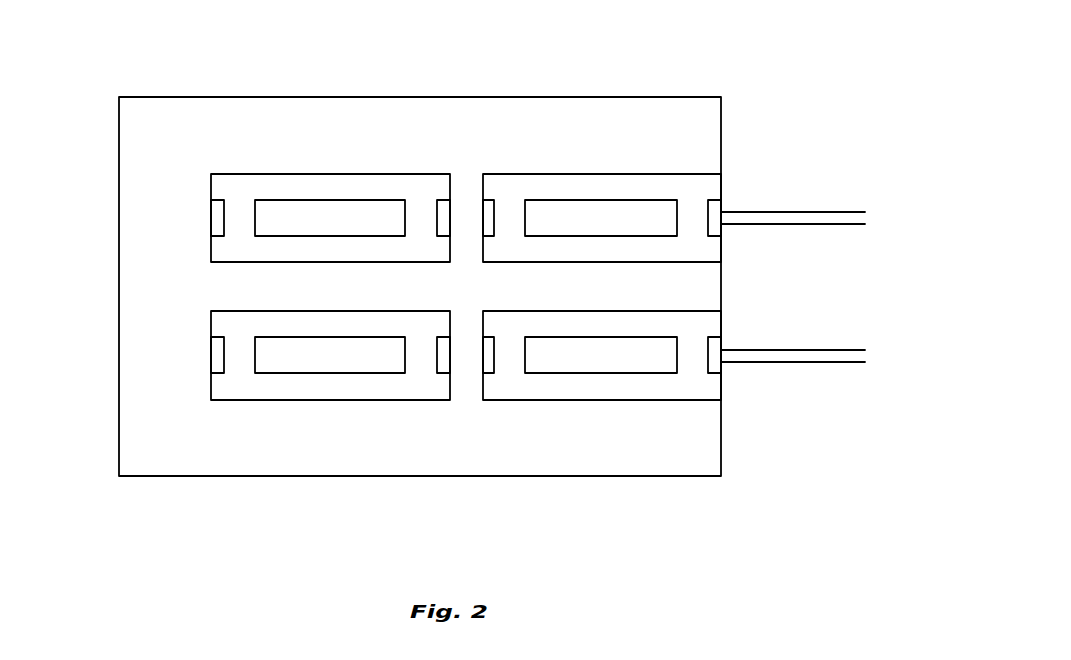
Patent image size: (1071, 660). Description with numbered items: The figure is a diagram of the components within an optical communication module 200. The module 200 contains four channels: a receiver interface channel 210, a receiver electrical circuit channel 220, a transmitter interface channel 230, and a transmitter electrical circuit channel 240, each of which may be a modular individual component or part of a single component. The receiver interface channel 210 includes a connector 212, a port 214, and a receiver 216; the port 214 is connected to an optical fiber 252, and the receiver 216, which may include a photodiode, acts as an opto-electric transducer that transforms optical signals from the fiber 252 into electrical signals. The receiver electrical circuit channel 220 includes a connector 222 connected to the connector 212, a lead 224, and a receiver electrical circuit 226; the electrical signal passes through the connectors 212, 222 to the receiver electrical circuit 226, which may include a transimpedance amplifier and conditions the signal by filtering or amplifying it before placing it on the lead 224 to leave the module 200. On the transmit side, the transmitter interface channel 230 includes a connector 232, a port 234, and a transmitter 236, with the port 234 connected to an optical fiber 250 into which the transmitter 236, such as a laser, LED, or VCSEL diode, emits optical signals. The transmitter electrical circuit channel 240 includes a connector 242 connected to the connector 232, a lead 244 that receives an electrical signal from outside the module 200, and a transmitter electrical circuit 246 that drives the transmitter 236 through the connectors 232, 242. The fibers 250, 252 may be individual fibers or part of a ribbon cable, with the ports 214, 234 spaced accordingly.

The optical communication module 200 is at (191, 476).
The receiver interface channel 210 is at (569, 400).
The connector 212 is at (493, 373).
The port 214 is at (715, 373).
The receiver 216 is at (640, 373).
The receiver electrical circuit channel 220 is at (244, 400).
The connector 222 is at (443, 373).
The lead 224 is at (211, 373).
The receiver electrical circuit 226 is at (331, 373).
The transmitter interface channel 230 is at (572, 174).
The connector 232 is at (495, 198).
The port 234 is at (715, 198).
The transmitter 236 is at (640, 200).
The transmitter electrical circuit channel 240 is at (245, 174).
The connector 242 is at (443, 198).
The lead 244 is at (211, 200).
The transmitter electrical circuit 246 is at (332, 200).
The optical fiber 250 is at (797, 212).
The optical fiber 252 is at (797, 362).